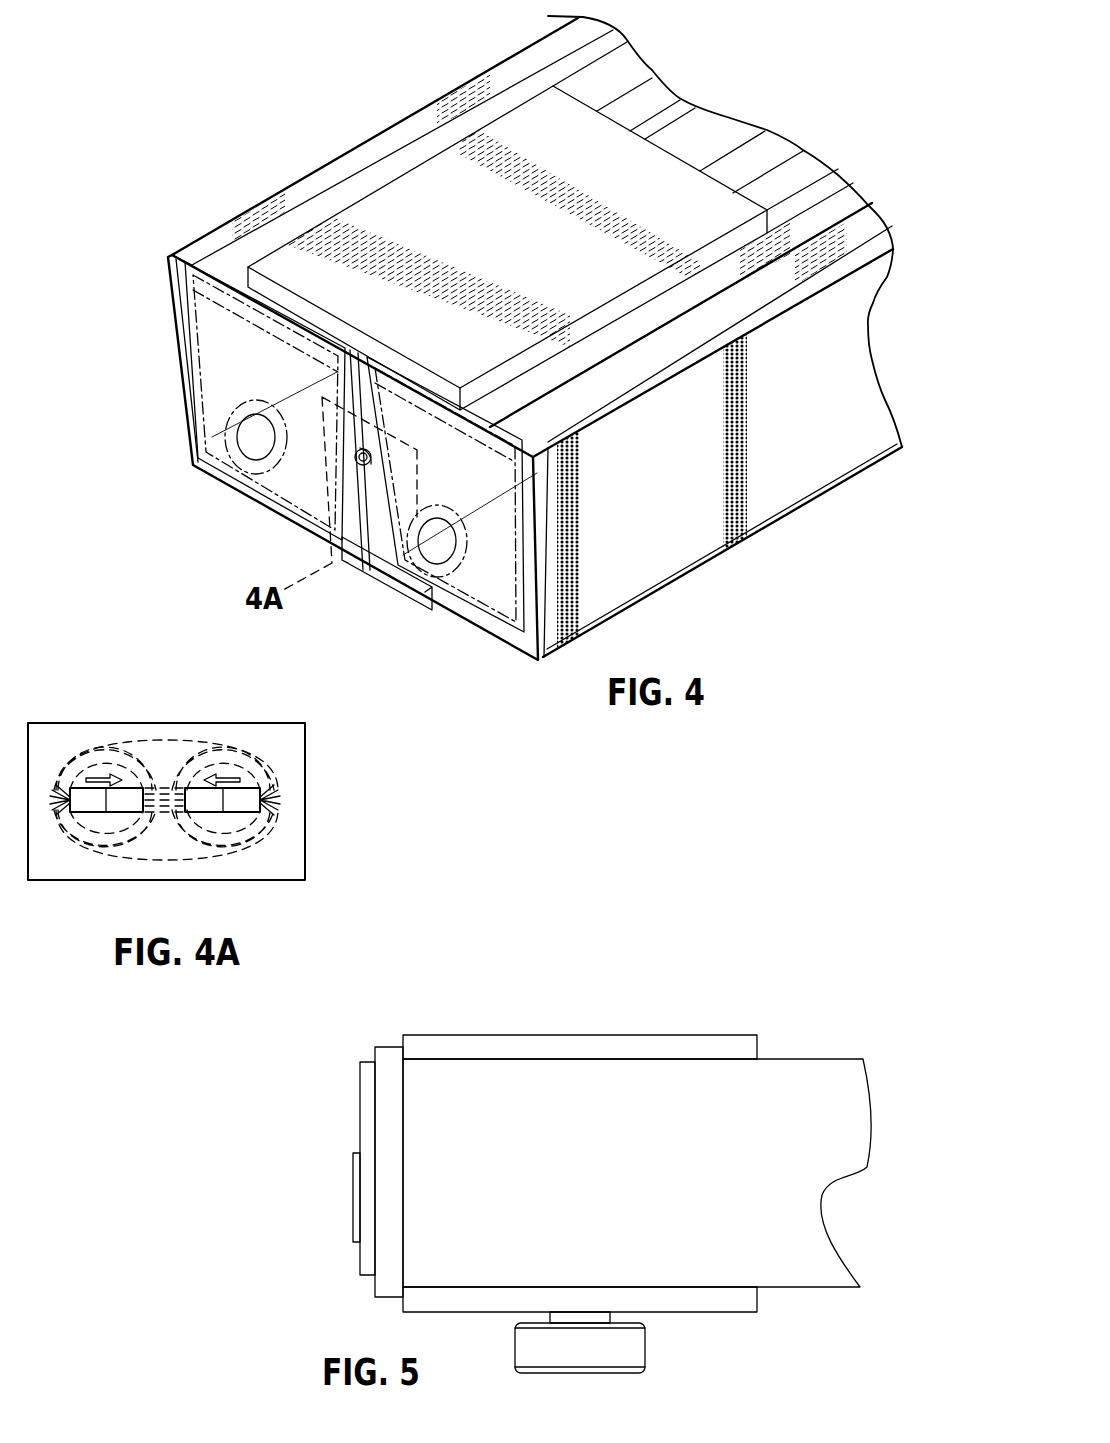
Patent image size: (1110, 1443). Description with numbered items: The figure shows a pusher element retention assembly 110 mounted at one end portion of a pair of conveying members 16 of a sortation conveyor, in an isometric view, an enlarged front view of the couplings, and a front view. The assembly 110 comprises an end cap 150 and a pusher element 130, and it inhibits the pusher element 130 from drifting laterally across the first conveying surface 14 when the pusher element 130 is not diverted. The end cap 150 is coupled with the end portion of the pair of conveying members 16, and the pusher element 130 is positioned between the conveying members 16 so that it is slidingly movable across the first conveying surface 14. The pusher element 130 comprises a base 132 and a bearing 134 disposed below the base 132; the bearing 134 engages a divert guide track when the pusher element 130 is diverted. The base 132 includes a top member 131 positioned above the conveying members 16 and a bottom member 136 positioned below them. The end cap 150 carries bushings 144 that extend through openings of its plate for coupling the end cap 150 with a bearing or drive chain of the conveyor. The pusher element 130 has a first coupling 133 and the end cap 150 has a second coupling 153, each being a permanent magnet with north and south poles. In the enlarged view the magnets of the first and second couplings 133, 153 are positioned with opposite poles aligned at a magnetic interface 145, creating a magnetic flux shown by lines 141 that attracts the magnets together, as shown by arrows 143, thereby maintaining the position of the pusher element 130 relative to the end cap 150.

In FIG. 5, the first conveying surface 14 is at (828, 963).
In FIG. 4, the conveying members 16 is at (210, 233).
In FIG. 5, the conveying members 16 is at (608, 1180).
In FIG. 4, the pusher element retention assembly 110 is at (167, 125).
In FIG. 5, the pusher element retention assembly 110 is at (425, 967).
In FIG. 4, the pusher element 130 is at (410, 193).
In FIG. 5, the pusher element 130 is at (617, 1010).
In FIG. 5, the top member 131 is at (700, 1033).
In FIG. 4, the base 132 is at (524, 246).
In FIG. 5, the base 132 is at (553, 1032).
In FIG. 4, the first coupling 133 is at (380, 455).
In FIG. 4A, the first coupling 133 is at (245, 765).
In FIG. 5, the bearing 134 is at (623, 1351).
In FIG. 5, the bottom member 136 is at (740, 1302).
In FIG. 4A, the lines 141 is at (173, 750).
In FIG. 4A, the arrows 143 is at (117, 778).
In FIG. 4, the bushings 144 is at (233, 407).
In FIG. 5, the bushings 144 is at (357, 1175).
In FIG. 4A, the magnetic interface 145 is at (155, 812).
In FIG. 4, the end cap 150 is at (172, 278).
In FIG. 5, the end cap 150 is at (365, 1065).
In FIG. 4, the second coupling 153 is at (355, 460).
In FIG. 4A, the second coupling 153 is at (87, 753).